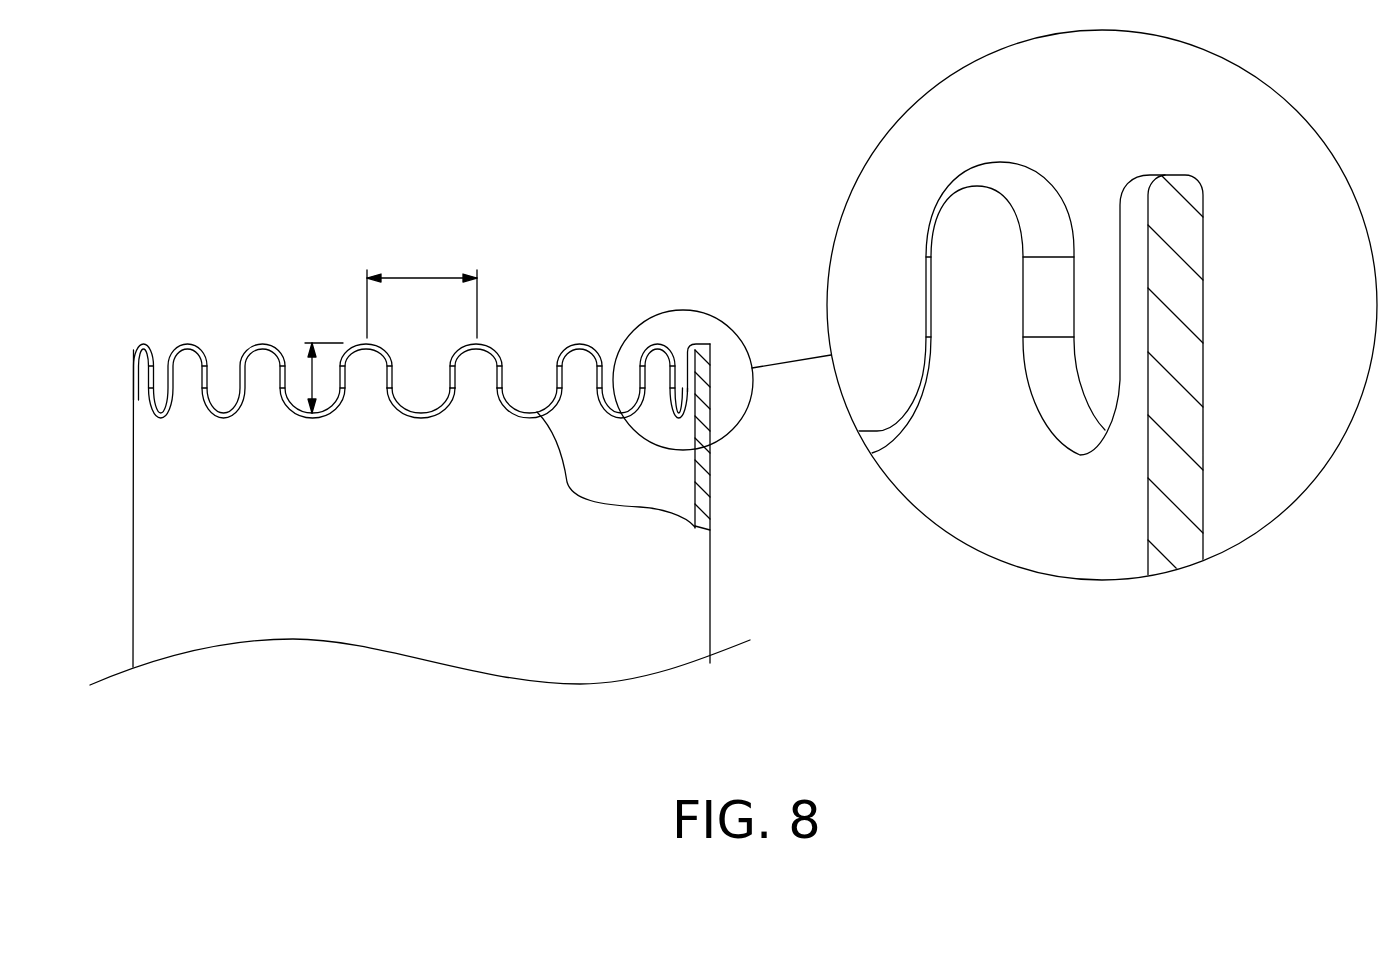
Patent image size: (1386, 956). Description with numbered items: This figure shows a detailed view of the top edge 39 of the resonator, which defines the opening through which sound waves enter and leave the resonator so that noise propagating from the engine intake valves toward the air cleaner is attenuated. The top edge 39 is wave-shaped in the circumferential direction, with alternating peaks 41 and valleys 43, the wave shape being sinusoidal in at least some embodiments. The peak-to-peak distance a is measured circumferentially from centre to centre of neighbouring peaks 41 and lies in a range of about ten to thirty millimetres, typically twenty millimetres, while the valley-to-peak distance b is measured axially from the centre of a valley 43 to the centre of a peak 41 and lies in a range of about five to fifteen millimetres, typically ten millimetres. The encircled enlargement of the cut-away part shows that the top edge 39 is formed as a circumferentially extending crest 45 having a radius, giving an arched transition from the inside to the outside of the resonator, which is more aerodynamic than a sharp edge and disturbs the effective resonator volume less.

The top edge 39 is at (207, 348).
The peaks 41 is at (484, 343).
The valleys 43 is at (423, 412).
The crest 45 is at (1037, 200).
The peak-to-peak distance a is at (422, 295).
The valley-to-peak distance b is at (311, 378).